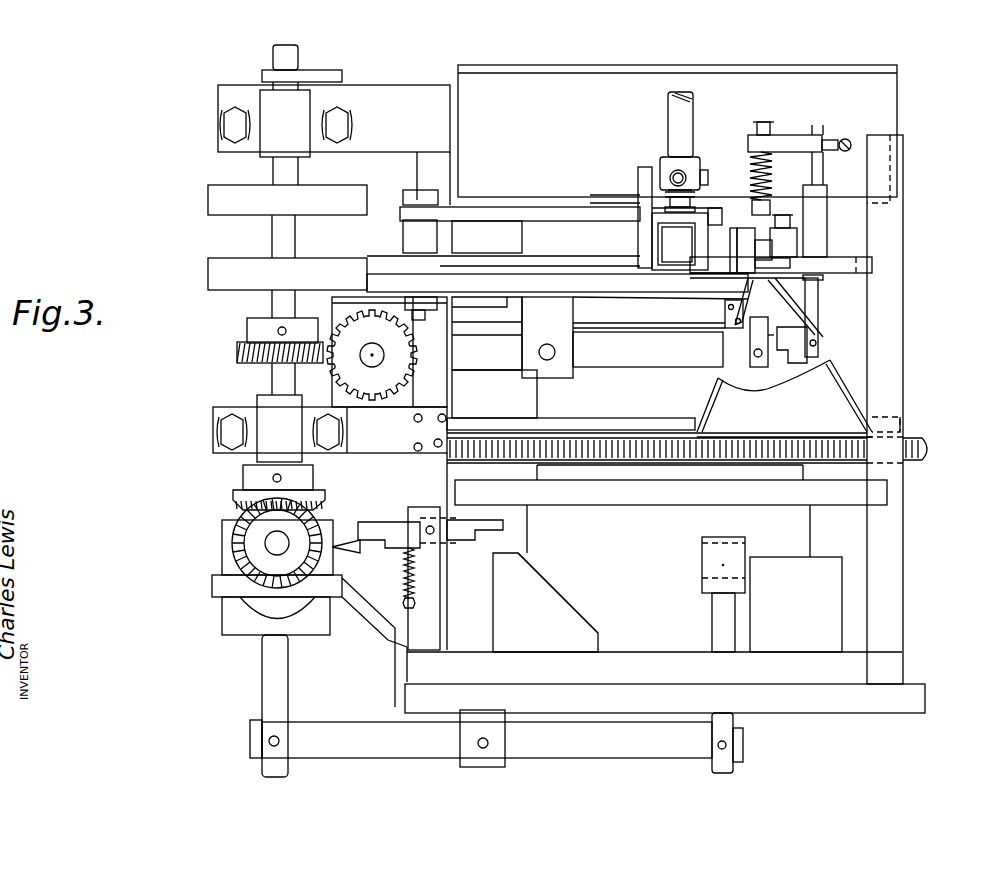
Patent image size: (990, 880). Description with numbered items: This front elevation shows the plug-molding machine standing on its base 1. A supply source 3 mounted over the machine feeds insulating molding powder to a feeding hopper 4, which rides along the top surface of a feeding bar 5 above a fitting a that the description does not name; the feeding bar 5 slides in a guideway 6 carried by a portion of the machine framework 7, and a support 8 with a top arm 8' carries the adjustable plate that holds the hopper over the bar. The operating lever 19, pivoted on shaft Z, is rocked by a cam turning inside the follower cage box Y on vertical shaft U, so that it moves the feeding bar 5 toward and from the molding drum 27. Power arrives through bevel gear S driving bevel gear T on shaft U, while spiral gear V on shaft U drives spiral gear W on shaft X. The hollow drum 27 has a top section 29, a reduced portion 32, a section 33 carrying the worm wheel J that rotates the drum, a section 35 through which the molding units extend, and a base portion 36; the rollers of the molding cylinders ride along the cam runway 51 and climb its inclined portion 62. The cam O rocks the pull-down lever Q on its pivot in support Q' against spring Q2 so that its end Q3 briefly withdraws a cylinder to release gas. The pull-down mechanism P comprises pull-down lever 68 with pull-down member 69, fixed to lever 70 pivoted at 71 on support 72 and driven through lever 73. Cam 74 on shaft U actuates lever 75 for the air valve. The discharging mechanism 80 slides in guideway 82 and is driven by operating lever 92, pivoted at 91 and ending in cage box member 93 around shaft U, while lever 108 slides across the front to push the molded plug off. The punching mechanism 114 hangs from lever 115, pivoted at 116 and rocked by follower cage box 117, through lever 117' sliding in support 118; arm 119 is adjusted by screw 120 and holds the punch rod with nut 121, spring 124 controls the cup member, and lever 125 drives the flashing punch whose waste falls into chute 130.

The base 1 is at (887, 713).
The supply source 3 is at (668, 106).
The feeding hopper 4 is at (695, 198).
The collar a is at (693, 190).
The feeding bar 5 is at (660, 232).
The guideway 6 is at (664, 245).
The machine framework 7 is at (742, 250).
The support 8 is at (655, 173).
The top arm 8' is at (637, 193).
The operating lever 19 is at (538, 212).
The molding drum 27 is at (870, 66).
The hollow top section 29 is at (903, 98).
The reduced portion 32 is at (540, 418).
The drum section 33 is at (898, 420).
The drum section 35 is at (888, 492).
The base portion 36 is at (812, 530).
The cam runway 51 is at (910, 603).
The inclined portion 62 is at (578, 599).
The pull down lever 68 is at (734, 770).
The pull down member 69 is at (699, 541).
The lever 70 is at (680, 758).
The pivot 71 is at (483, 748).
The support 72 is at (505, 765).
The lever 73 is at (254, 689).
The cam 74 is at (304, 68).
The lever 75 is at (333, 74).
The discharging mechanism 80 is at (798, 242).
The guideway 82 is at (800, 232).
The pivot 91 is at (728, 306).
The operating lever 92 is at (481, 283).
The cage box member 93 is at (214, 270).
The lever 108 is at (660, 312).
The punching mechanism 114 is at (757, 207).
The lever 115 is at (490, 366).
The pivot 116 is at (553, 357).
The follower cage box 117 is at (802, 316).
The lever 117' is at (802, 316).
The support 118 is at (828, 195).
The arm 119 is at (800, 134).
The screw 120 is at (849, 140).
The nut 121 is at (766, 122).
The spring 124 is at (752, 362).
The lever 125 is at (778, 352).
The chute 130 is at (840, 366).
The worm wheel J is at (932, 450).
The eccentric cam O is at (343, 538).
The pull down mechanism P is at (753, 545).
The pull down lever Q is at (389, 518).
The support Q' is at (445, 578).
The spring Q2 is at (406, 586).
The lever end Q3 is at (505, 522).
The bevel gear S is at (236, 535).
The bevel gear T is at (243, 485).
The vertical shaft U is at (264, 385).
The spiral gear V is at (230, 353).
The spiral gear W is at (330, 330).
The shaft X is at (370, 362).
The follower cage box Y is at (210, 192).
The shaft Z is at (398, 275).